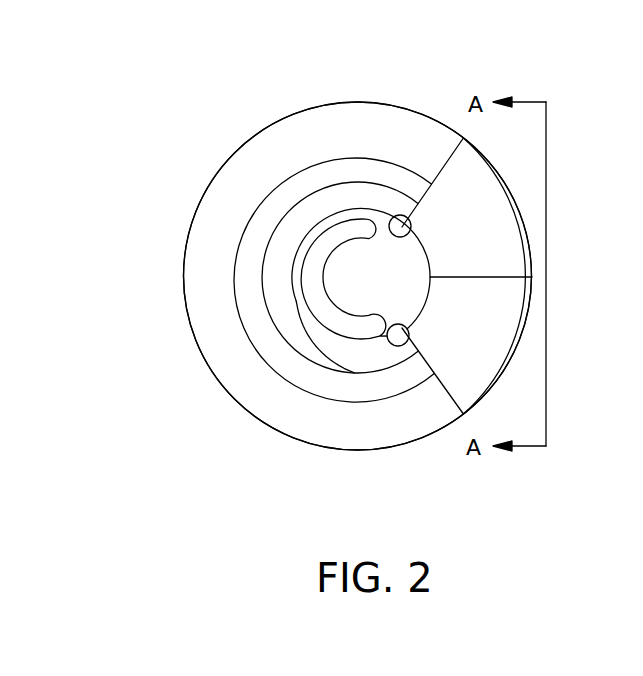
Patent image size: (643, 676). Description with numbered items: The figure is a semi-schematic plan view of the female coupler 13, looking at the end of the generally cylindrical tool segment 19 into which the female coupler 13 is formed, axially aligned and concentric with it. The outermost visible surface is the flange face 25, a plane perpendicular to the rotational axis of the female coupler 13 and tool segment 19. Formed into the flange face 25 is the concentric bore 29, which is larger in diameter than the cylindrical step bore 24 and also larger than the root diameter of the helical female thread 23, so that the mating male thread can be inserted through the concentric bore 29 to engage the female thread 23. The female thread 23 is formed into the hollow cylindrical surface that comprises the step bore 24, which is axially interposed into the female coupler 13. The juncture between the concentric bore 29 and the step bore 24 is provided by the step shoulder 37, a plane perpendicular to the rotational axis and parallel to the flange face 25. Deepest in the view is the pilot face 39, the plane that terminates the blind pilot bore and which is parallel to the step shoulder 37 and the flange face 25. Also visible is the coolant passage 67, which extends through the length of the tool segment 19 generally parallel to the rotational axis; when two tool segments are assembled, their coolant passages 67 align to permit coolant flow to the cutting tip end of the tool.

The female coupler 13 is at (183, 254).
The tool segment 19 is at (214, 152).
The helical female thread 23 is at (412, 229).
The cylindrical step bore 24 is at (408, 338).
The flange face 25 is at (287, 125).
The concentric bore 29 is at (320, 171).
The step shoulder 37 is at (368, 170).
The pilot face 39 is at (368, 268).
The coolant passage 67 is at (350, 328).